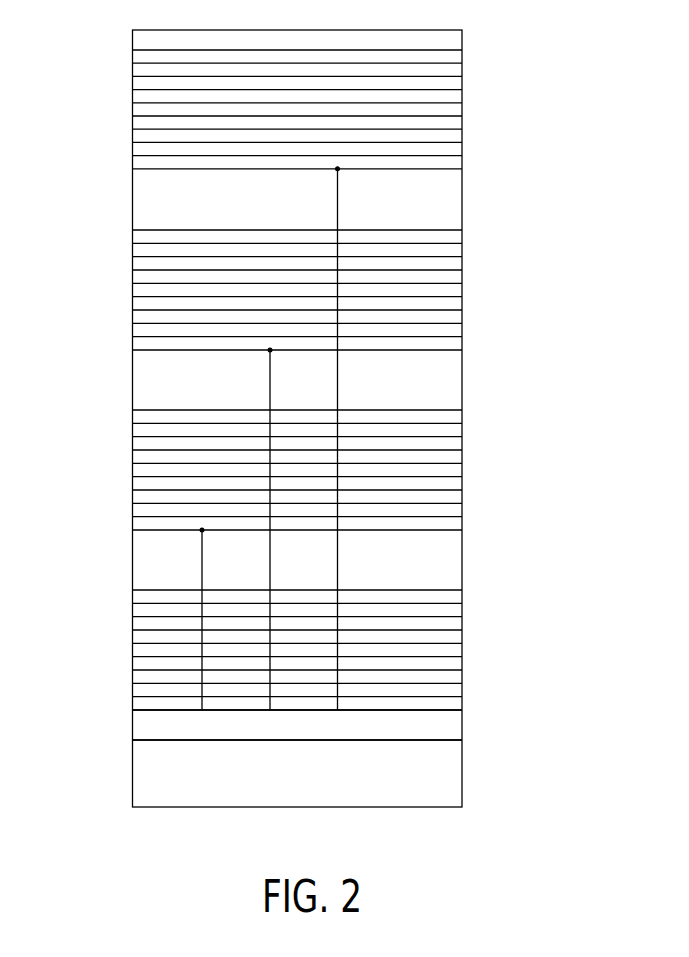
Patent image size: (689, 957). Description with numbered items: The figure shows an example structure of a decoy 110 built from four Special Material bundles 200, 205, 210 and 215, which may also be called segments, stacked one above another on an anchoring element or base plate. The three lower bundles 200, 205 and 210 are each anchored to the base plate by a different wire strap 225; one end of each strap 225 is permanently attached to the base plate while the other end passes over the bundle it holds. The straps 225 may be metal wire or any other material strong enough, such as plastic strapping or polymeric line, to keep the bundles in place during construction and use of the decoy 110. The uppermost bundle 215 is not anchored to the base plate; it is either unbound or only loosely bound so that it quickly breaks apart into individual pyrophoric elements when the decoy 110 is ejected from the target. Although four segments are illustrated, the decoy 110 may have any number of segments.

The Special Material bundle 200 is at (468, 590).
The Special Material bundle 205 is at (468, 410).
The Special Material bundle 210 is at (468, 230).
The Special Material bundle 215 is at (468, 50).
The wire straps 225 is at (333, 187).
The decoy 110 is at (131, 710).